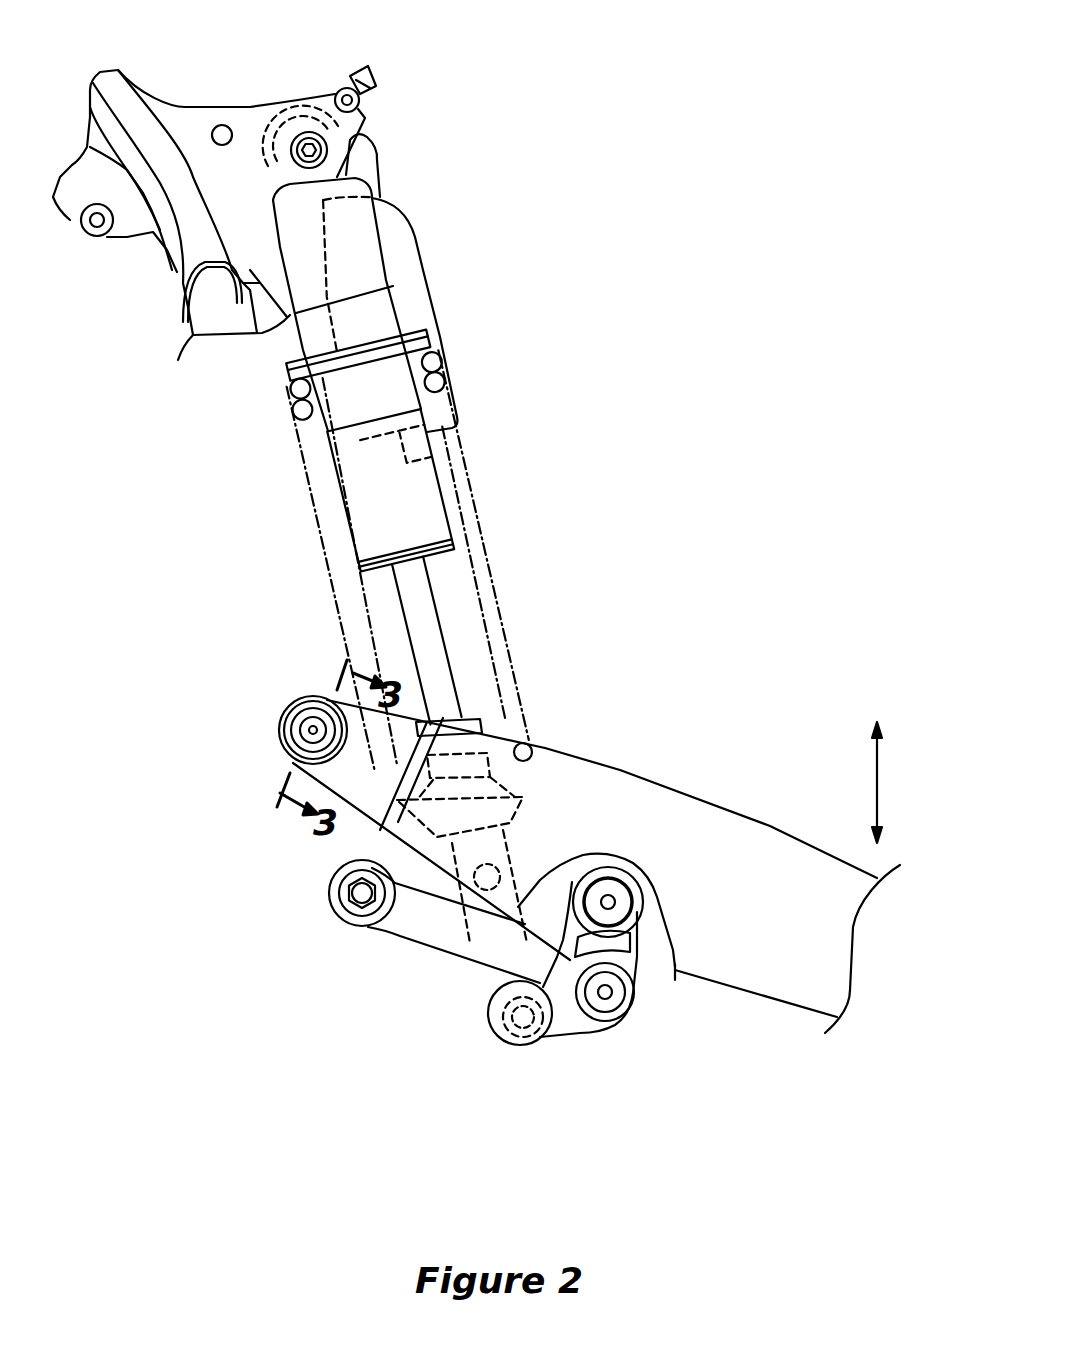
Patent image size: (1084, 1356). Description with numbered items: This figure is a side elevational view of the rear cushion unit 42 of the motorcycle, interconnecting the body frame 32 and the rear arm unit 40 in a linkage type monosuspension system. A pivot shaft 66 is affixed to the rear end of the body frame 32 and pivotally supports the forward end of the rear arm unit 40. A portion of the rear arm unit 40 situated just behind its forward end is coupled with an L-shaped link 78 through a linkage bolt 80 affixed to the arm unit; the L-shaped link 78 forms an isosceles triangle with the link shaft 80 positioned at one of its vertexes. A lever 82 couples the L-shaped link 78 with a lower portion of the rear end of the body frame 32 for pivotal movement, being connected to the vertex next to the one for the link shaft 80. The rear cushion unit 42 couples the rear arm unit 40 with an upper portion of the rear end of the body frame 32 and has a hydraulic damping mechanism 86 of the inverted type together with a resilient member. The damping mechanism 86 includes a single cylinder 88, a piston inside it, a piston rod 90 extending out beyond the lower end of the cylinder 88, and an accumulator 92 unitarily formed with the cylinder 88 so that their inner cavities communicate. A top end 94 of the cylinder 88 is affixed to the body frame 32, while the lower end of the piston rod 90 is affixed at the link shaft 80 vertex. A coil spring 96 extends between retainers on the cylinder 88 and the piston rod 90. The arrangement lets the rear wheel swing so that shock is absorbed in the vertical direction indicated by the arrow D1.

The body frame 32 is at (186, 120).
The top end of the cylinder 94 is at (352, 140).
The rear cushion unit 42 is at (484, 504).
The accumulator 92 is at (428, 278).
The coil spring 96 is at (455, 375).
The cylinder 88 is at (432, 525).
The hydraulic damping mechanism 86 is at (452, 591).
The pivot shaft 66 is at (290, 713).
The lever 82 is at (428, 918).
The piston rod 90 is at (495, 996).
The L-shaped link 78 is at (556, 1037).
The linkage bolt 80 is at (609, 900).
The rear arm unit 40 is at (775, 810).
The arrow indicating vertical direction D1 is at (880, 775).